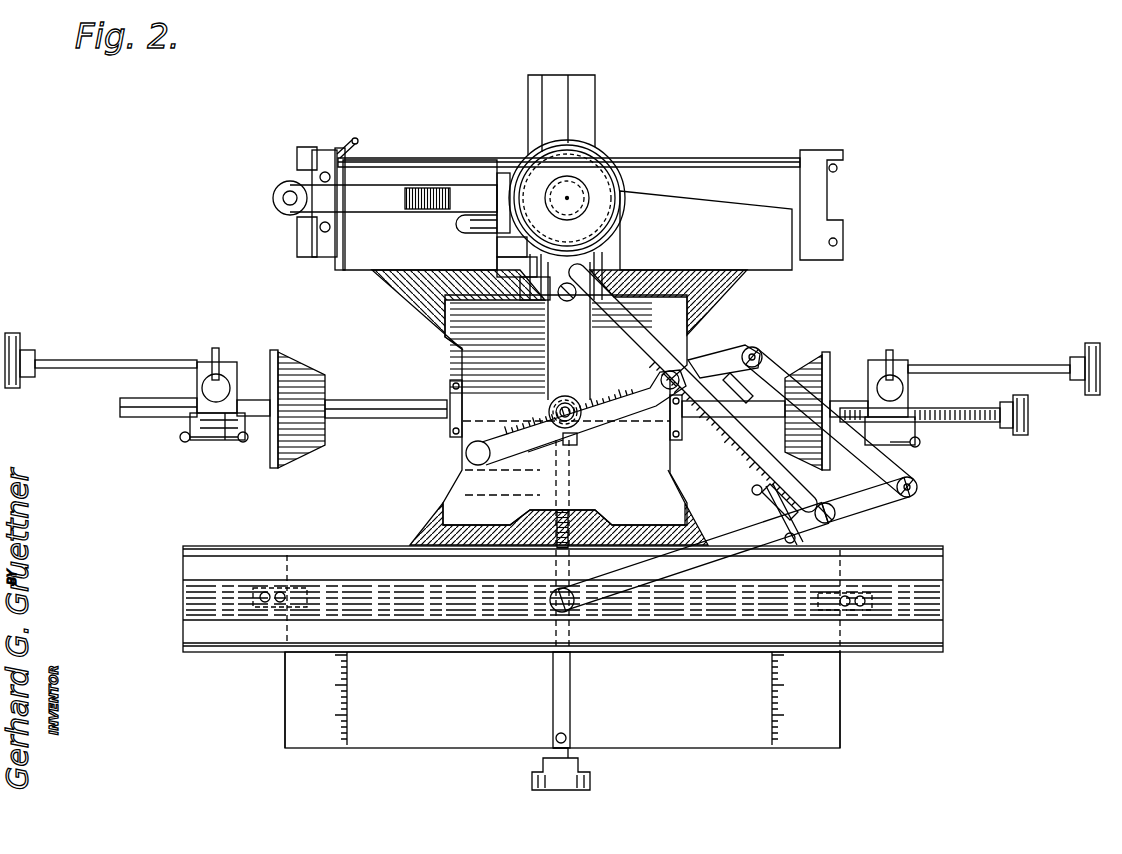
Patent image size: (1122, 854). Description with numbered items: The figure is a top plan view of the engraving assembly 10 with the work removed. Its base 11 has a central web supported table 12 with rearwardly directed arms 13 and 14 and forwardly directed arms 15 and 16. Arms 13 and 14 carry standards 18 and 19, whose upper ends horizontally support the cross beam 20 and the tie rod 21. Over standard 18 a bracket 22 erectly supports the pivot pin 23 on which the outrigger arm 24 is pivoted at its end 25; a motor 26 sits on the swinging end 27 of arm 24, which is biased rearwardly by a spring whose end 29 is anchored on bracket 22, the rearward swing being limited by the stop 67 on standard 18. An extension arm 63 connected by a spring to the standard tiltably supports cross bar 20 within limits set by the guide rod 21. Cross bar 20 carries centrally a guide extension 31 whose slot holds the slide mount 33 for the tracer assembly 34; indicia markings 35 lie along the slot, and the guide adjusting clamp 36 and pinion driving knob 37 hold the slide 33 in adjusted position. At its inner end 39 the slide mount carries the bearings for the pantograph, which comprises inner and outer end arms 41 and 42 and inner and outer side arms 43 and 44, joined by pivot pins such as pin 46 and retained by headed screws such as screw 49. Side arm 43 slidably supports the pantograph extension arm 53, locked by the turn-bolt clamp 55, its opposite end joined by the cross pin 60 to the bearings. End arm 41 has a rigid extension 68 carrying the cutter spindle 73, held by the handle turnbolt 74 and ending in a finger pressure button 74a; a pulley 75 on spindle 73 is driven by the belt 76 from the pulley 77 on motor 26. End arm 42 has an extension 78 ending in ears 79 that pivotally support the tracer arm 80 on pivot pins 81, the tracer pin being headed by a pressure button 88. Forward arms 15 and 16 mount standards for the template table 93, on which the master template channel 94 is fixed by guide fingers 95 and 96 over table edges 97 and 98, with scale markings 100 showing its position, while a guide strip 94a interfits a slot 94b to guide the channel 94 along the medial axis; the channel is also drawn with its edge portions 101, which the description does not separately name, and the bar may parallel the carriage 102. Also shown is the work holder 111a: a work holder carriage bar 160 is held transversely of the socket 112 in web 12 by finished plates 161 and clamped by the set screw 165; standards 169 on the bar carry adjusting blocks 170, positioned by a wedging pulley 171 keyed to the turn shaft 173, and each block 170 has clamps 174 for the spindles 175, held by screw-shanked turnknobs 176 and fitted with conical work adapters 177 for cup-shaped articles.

The engraving assembly 10 is at (204, 155).
The base 11 is at (424, 333).
The central web supported table 12 is at (470, 372).
The rearwardly directed arm 13 is at (405, 285).
The rearwardly directed arm 14 is at (728, 282).
The forwardly directed arm 15 is at (420, 535).
The forwardly directed arm 16 is at (695, 528).
The standard 18 is at (312, 250).
The standard 19 is at (818, 252).
The cross beam 20 is at (720, 210).
The tie rod 21 is at (380, 158).
The bracket 22 is at (298, 222).
The pivot pin 23 is at (282, 190).
The outrigger arm 24 is at (410, 200).
The end of outrigger arm 25 is at (283, 200).
The motor 26 is at (525, 162).
The swinging end of arm 27 is at (499, 190).
The spring end 29 is at (305, 165).
The guide extension 31 is at (497, 264).
The slide mount 33 is at (586, 74).
The tracer assembly 34 is at (919, 509).
The indicia markings 35 is at (600, 268).
The guide adjusting clamp 36 is at (460, 226).
The pinion driving knob 37 is at (500, 247).
The inner end of slide mount 39 is at (530, 300).
The inner end arm 41 is at (722, 356).
The outer end arm 42 is at (870, 484).
The inner side arm 43 is at (722, 430).
The outer side arm 44 is at (772, 365).
The pivot pin 46 is at (754, 347).
The headed screw 49 is at (660, 378).
The pantograph extension arm 53 is at (640, 325).
The turn-bolt clamp 55 is at (740, 385).
The cross pin 60 is at (570, 300).
The extension arm 63 is at (343, 152).
The stop 67 is at (340, 158).
The extension 68 is at (630, 418).
The cutter spindle 73 is at (566, 396).
The handle turnbolt 74 is at (574, 446).
The finger pressure button 74a is at (488, 462).
The pulley 75 is at (581, 412).
The belt 76 is at (590, 348).
The pulley 77 is at (548, 212).
The extension 78 is at (782, 495).
The ears 79 is at (786, 518).
The tracer arm 80 is at (700, 560).
The pivot pins 81 is at (756, 494).
The pressure button 88 is at (568, 590).
The template table 93 is at (410, 748).
The master template channel 94 is at (210, 545).
The guide strip 94a is at (571, 695).
The slot 94b is at (553, 640).
The guide finger 95 is at (258, 588).
The guide finger 96 is at (860, 592).
The table edge 97 is at (285, 696).
The table edge 98 is at (840, 698).
The scale markings 100 is at (352, 705).
The frame edge 101 is at (185, 549).
The carriage 102 is at (185, 598).
The work holder 111a is at (971, 353).
The socket 112 is at (578, 384).
The work holder carriage bar 160 is at (400, 400).
The finished plates 161 is at (450, 420).
The set screw 165 is at (557, 527).
The standards 169 is at (203, 388).
The adjusting blocks 170 is at (225, 362).
The wedging pulley 171 is at (212, 350).
The turn shaft 173 is at (90, 360).
The clamps 174 is at (190, 432).
The spindles 175 is at (170, 410).
The screw-shanked turnknobs 176 is at (214, 445).
The conical work adapters 177 is at (300, 440).